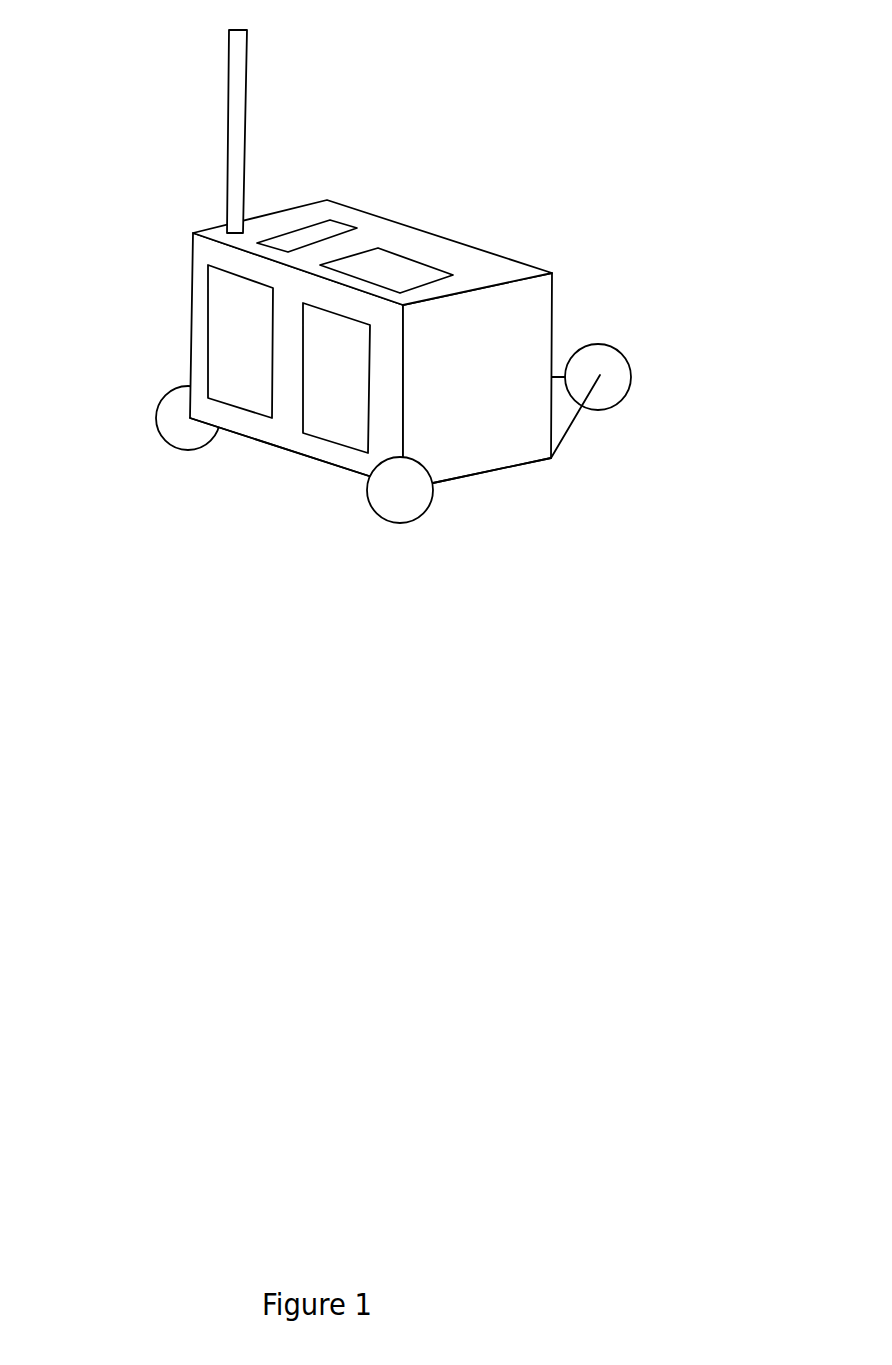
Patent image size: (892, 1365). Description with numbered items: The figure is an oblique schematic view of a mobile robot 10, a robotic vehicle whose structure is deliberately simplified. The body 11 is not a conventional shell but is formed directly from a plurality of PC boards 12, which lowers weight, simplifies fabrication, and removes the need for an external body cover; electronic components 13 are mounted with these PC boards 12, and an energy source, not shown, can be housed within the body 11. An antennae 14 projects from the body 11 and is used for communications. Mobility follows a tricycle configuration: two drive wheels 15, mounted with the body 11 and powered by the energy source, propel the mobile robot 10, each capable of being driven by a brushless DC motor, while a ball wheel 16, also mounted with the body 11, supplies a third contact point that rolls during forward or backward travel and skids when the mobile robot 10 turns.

The mobile robot 10 is at (128, 588).
The body 11 is at (503, 469).
The PC boards 12 is at (493, 270).
The electronic components 13 is at (337, 337).
The antennae 14 is at (304, 121).
The drive wheels 15 is at (423, 513).
The ball wheel 16 is at (651, 374).